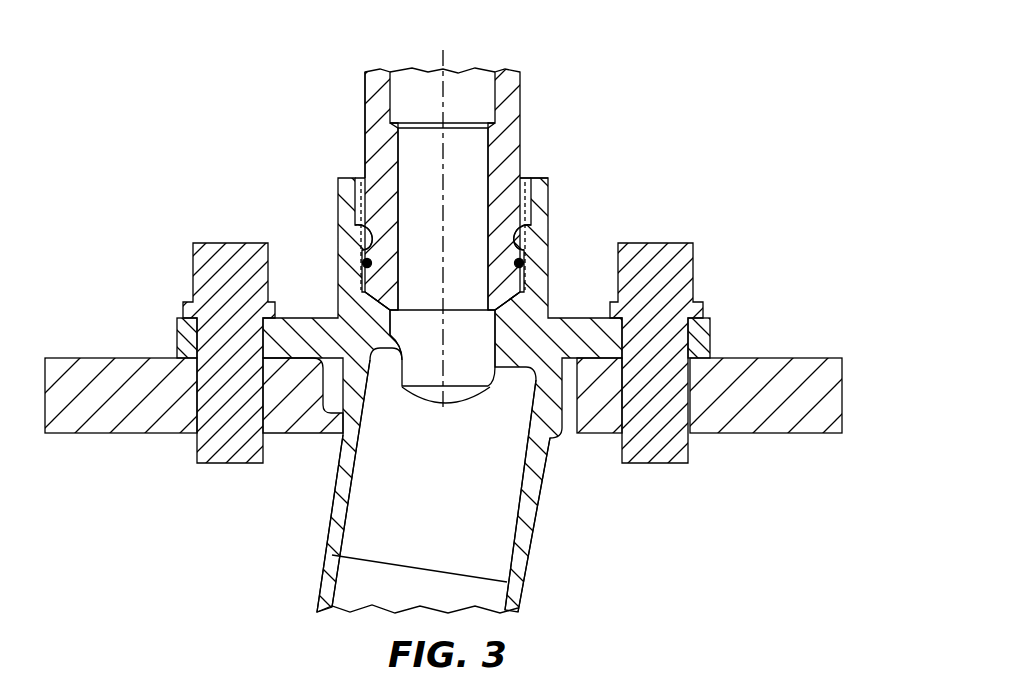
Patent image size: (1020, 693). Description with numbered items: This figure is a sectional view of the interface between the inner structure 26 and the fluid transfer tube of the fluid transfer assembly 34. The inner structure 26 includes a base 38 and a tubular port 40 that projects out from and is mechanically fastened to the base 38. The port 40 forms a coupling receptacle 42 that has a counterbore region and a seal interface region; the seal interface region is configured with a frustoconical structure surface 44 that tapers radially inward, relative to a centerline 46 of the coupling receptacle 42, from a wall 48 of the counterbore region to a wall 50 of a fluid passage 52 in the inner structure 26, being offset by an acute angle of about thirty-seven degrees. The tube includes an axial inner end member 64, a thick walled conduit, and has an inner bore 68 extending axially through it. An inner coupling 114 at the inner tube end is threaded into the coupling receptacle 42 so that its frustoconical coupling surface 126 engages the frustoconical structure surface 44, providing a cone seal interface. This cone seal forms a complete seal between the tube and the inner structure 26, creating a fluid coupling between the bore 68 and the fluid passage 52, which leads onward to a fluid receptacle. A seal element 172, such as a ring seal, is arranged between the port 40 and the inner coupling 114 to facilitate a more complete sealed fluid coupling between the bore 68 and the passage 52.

The inner structure 26 is at (452, 310).
The fluid transfer assembly 34 is at (531, 85).
The base 38 is at (753, 358).
The tubular port 40 is at (548, 225).
The coupling receptacle 42 is at (508, 292).
The frustoconical structure surface 44 is at (398, 290).
The centerline 46 is at (440, 58).
The wall 48 is at (368, 240).
The wall 50 is at (400, 356).
The fluid passage 52 is at (458, 372).
The axial inner end member 64 is at (354, 121).
The inner bore 68 is at (462, 100).
The inner coupling 114 is at (535, 192).
The frustoconical coupling surface 126 is at (377, 300).
The seal element 172 is at (524, 263).